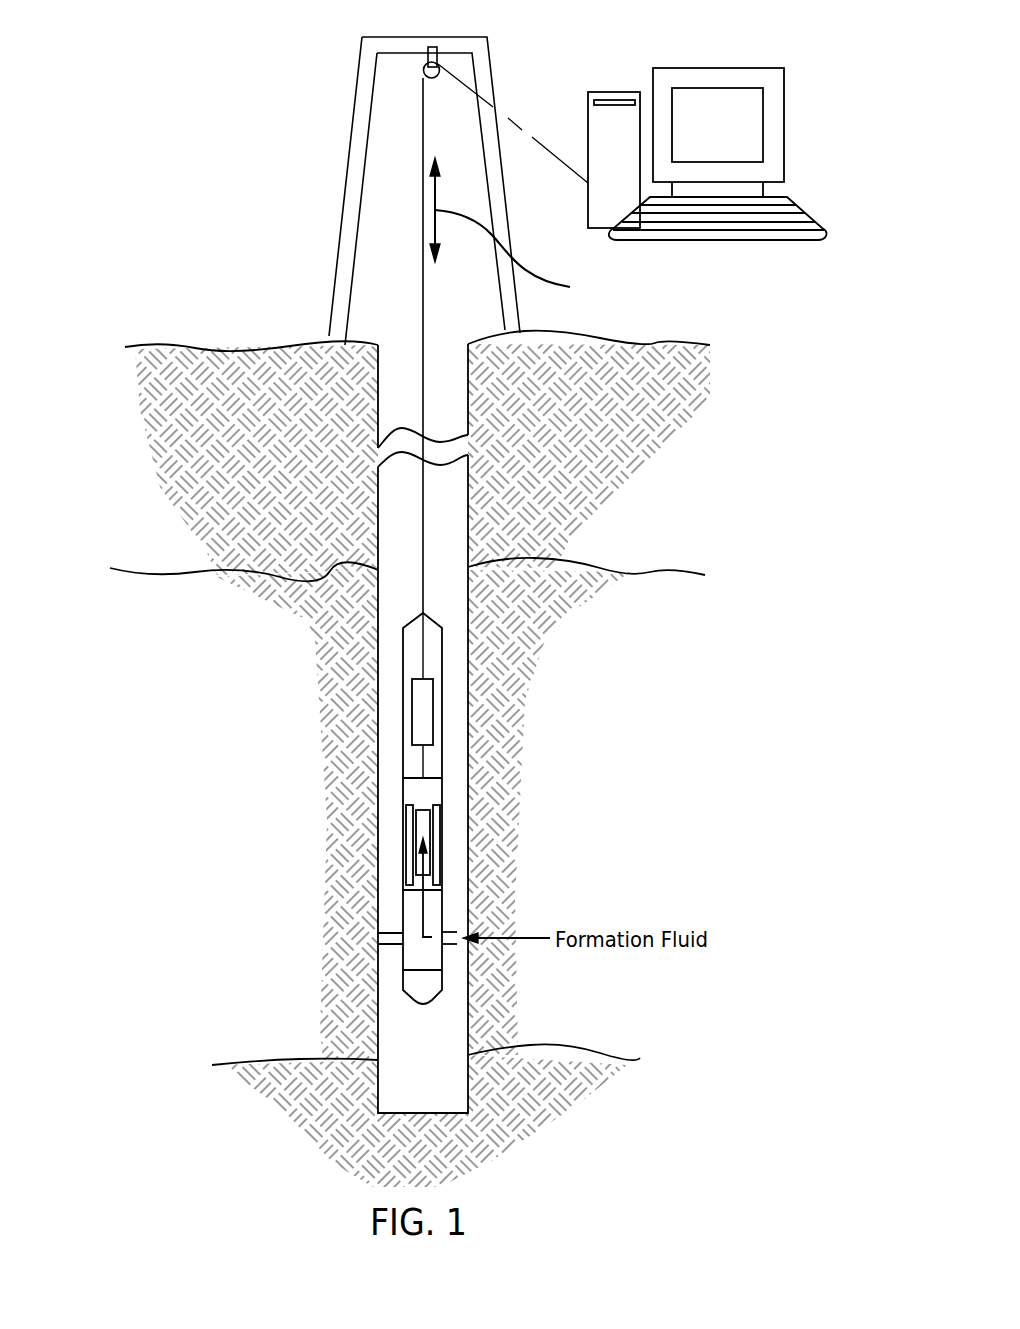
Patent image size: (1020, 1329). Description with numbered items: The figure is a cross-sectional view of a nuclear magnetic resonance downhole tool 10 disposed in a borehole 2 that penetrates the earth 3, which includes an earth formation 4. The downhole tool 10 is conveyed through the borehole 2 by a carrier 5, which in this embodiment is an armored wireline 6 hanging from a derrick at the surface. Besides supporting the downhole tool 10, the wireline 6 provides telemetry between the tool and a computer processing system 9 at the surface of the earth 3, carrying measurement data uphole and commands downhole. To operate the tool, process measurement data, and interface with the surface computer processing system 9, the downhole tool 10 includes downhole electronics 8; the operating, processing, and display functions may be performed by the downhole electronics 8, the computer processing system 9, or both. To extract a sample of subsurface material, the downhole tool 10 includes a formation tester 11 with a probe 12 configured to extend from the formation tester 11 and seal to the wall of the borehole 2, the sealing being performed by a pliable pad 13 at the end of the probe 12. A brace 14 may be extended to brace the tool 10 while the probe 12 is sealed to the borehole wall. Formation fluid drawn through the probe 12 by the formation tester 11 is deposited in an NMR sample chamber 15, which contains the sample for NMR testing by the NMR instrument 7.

The borehole 2 is at (378, 387).
The earth 3 is at (540, 470).
The earth formation 4 is at (596, 709).
The carrier 5 is at (423, 510).
The armored wireline 6 is at (423, 312).
The NMR instrument 7 is at (403, 803).
The downhole electronics 8 is at (412, 716).
The computer processing system 9 is at (588, 118).
The downhole tool 10 is at (403, 660).
The formation tester 11 is at (407, 955).
The probe 12 is at (454, 930).
The pliable pad 13 is at (460, 948).
The brace 14 is at (387, 938).
The NMR sample chamber 15 is at (420, 810).